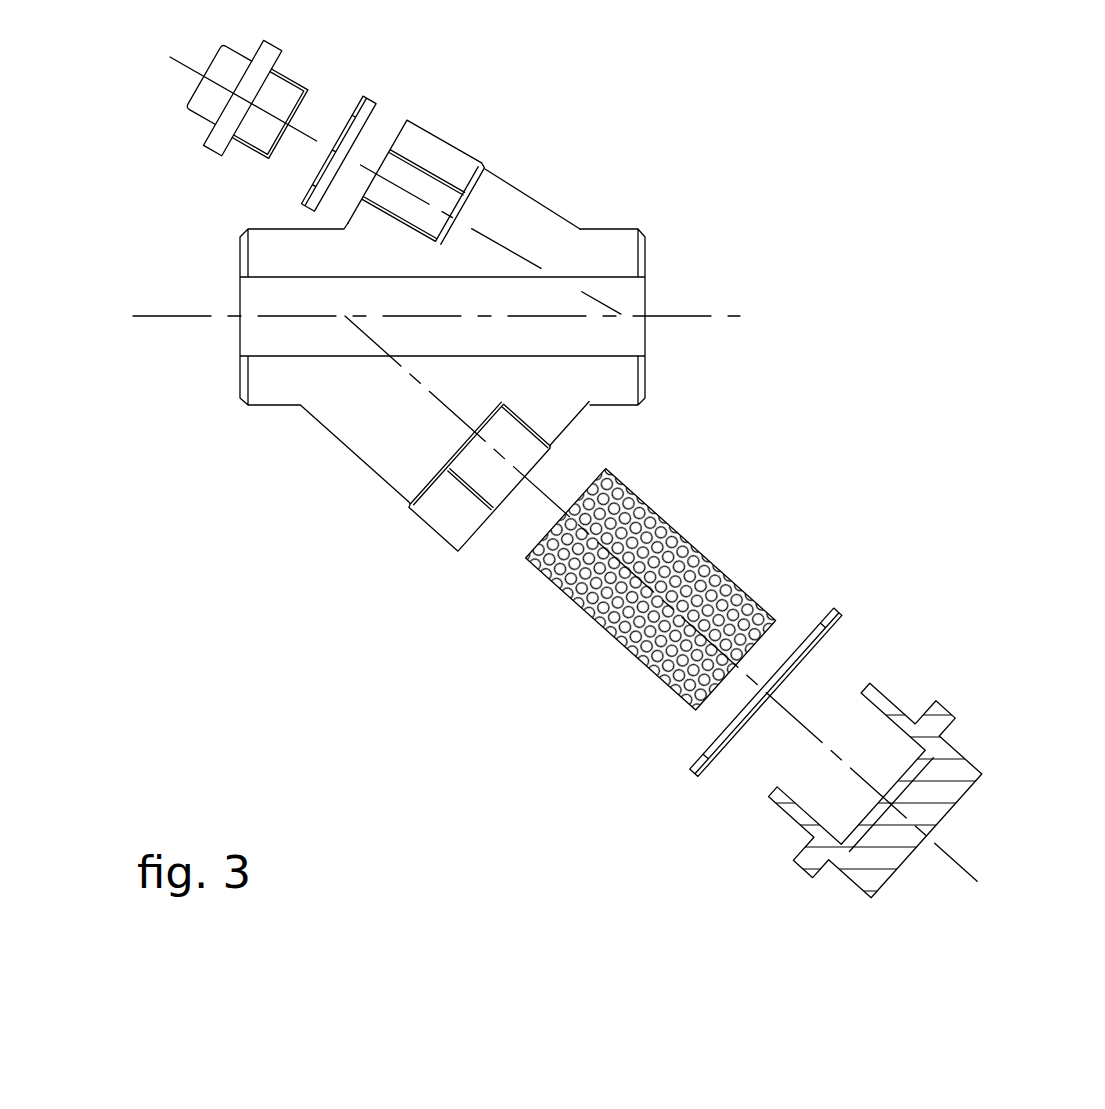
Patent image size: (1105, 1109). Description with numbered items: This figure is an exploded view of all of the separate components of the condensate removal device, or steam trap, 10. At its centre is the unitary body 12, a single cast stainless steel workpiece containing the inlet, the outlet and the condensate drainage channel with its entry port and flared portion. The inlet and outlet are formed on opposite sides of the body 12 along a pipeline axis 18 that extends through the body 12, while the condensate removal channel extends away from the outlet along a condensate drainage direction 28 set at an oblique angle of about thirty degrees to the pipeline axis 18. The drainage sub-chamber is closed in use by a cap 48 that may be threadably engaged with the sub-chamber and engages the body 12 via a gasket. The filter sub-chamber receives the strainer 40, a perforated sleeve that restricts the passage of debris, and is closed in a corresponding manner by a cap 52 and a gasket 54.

The condensate removal device 10 is at (621, 533).
The unitary body 12 is at (537, 202).
The pipeline axis 18 is at (708, 315).
The condensate drainage direction 28 is at (222, 136).
The cap 48 is at (212, 152).
The strainer 40 is at (667, 523).
The gasket 54 is at (839, 612).
The cap 52 is at (948, 714).